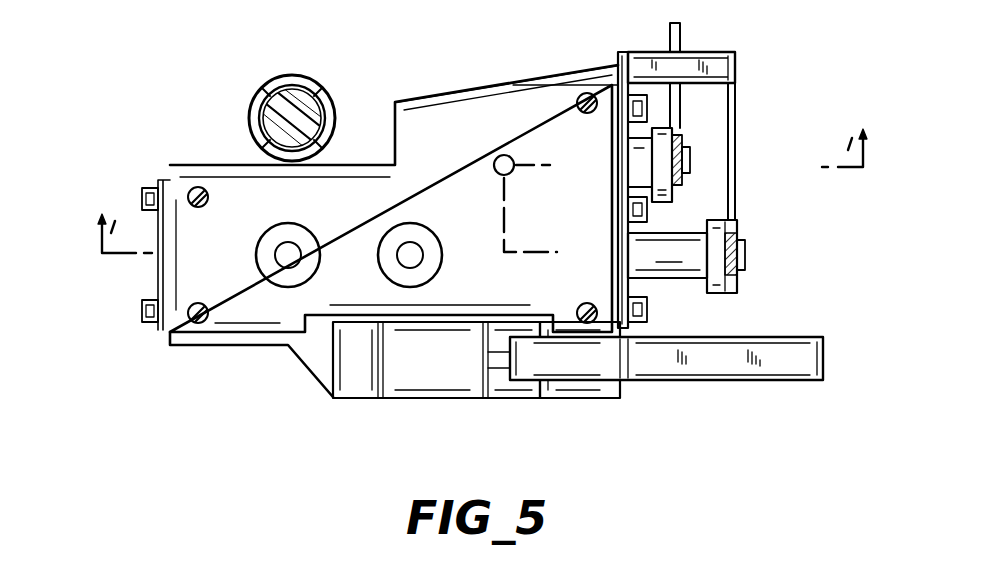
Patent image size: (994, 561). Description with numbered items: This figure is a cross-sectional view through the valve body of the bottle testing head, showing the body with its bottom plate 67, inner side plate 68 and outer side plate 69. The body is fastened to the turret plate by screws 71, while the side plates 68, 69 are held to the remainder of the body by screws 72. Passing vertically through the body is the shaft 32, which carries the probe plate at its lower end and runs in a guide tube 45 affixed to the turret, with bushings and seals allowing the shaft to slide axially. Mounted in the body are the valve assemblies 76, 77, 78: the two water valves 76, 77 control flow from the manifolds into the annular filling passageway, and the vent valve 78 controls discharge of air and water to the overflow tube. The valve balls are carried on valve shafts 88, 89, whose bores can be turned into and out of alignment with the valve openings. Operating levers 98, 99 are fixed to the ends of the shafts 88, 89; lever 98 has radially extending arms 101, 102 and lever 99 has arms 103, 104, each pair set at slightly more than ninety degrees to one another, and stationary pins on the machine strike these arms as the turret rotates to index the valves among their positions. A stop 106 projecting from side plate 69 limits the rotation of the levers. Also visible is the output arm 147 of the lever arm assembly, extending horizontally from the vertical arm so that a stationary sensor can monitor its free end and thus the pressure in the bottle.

The shaft 32 is at (292, 104).
The guide tube 45 is at (336, 118).
The bottom plate 67 is at (573, 77).
The inner side plate 68 is at (160, 182).
The outer side plate 69 is at (620, 52).
The screws 71 is at (201, 188).
The screws 72 is at (147, 325).
The valve assembly 76 is at (405, 292).
The valve assembly 77 is at (505, 182).
The valve assembly 78 is at (283, 292).
The valve shaft 88 is at (655, 250).
The valve shaft 89 is at (641, 156).
The operating lever 98 is at (690, 292).
The operating lever 99 is at (646, 173).
The lever arm 101 is at (742, 272).
The lever arm 102 is at (733, 192).
The lever arm 103 is at (690, 162).
The lever arm 104 is at (681, 96).
The stop 106 is at (710, 60).
The output arm 147 is at (770, 366).